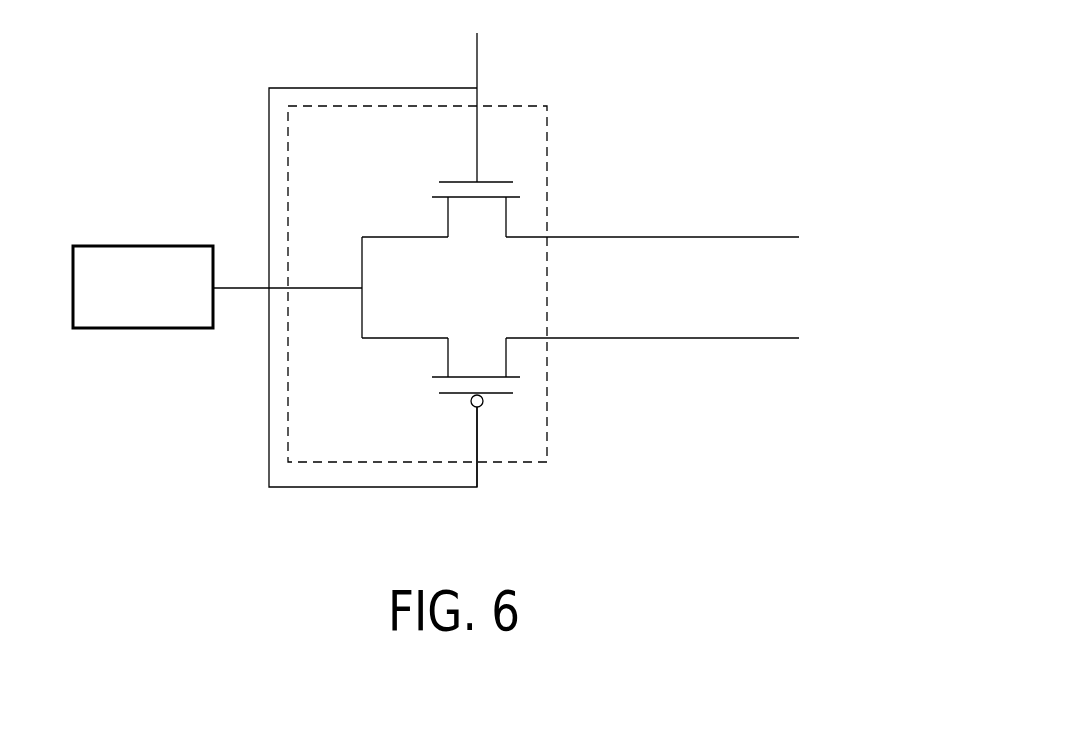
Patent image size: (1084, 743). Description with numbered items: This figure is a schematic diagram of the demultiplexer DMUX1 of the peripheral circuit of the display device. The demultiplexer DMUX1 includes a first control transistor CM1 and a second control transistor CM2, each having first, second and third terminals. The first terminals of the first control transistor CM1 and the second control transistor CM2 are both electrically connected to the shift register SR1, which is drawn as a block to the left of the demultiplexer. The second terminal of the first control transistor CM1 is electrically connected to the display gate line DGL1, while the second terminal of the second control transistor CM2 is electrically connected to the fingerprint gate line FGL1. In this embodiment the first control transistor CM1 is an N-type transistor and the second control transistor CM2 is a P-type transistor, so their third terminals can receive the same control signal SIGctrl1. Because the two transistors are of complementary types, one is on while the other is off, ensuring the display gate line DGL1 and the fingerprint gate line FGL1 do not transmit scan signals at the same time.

The shift register SR1 is at (143, 287).
The demultiplexer DMUX1 is at (547, 127).
The first control transistor CM1 is at (438, 188).
The second control transistor CM2 is at (438, 386).
The display gate line DGL1 is at (647, 236).
The fingerprint gate line FGL1 is at (647, 339).
The control signal SIGctrl1 is at (490, 58).